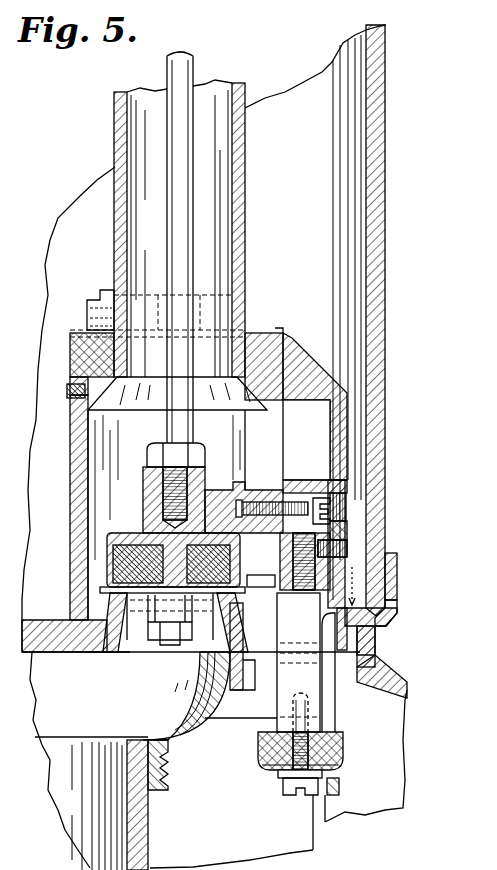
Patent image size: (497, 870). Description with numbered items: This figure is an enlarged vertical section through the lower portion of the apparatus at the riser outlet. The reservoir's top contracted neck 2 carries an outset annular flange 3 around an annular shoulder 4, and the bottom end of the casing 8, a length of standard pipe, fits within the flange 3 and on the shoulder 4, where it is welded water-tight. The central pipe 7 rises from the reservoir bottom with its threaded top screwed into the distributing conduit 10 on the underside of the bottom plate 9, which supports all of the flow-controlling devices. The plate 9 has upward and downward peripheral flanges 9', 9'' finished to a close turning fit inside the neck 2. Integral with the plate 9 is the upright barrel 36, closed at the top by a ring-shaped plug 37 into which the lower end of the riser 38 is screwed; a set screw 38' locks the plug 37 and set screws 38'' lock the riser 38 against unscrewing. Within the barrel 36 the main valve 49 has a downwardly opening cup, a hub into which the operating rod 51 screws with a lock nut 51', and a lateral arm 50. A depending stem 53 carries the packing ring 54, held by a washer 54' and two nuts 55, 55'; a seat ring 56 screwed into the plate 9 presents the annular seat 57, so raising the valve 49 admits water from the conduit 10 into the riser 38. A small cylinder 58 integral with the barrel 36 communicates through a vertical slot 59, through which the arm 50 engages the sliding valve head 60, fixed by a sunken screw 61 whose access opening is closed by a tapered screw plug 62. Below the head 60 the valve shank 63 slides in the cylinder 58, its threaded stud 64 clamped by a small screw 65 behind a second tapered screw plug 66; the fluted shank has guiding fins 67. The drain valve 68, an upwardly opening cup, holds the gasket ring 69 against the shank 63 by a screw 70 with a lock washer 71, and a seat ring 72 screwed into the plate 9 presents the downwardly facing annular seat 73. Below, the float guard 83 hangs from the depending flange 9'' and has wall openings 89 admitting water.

The neck 2 is at (376, 650).
The flange 3 is at (388, 557).
The shoulder 4 is at (390, 603).
The pipe 7 is at (120, 833).
The casing 8 is at (378, 302).
The bottom plate 9 is at (199, 671).
The upwardly extending flange 9' is at (354, 586).
The downwardly extending flange 9'' is at (352, 672).
The distributing conduit 10 is at (190, 742).
The barrel 36 is at (72, 466).
The plug 37 is at (258, 333).
The riser 38 is at (170, 230).
The set screw 38' is at (61, 385).
The set screws 38'' is at (88, 301).
The main valve 49 is at (120, 533).
The arm 50 is at (233, 490).
The operating rod 51 is at (190, 247).
The lock nut 51' is at (191, 449).
The stem 53 is at (170, 652).
The packing ring 54 is at (187, 564).
The washer 54' is at (224, 622).
The nut 55 is at (170, 616).
The nut 55' is at (158, 637).
The seat ring 56 is at (112, 653).
The annular seat 57 is at (112, 600).
The small cylinder 58 is at (342, 384).
The vertical slot 59 is at (285, 447).
The valve head 60 is at (292, 483).
The screw 61 is at (262, 492).
The tapered screw plug 62 is at (348, 498).
The valve shank 63 is at (277, 697).
The threaded stud 64 is at (298, 590).
The small screw 65 is at (340, 542).
The second tapered screw plug 66 is at (365, 548).
The fins 67 is at (277, 597).
The drain valve 68 is at (260, 767).
The gasket ring 69 is at (344, 740).
The screw 70 is at (290, 796).
The lock washer 71 is at (278, 779).
The seat ring 72 is at (248, 646).
The annular seat 73 is at (296, 700).
The guard 83 is at (340, 790).
The openings 89 is at (325, 835).